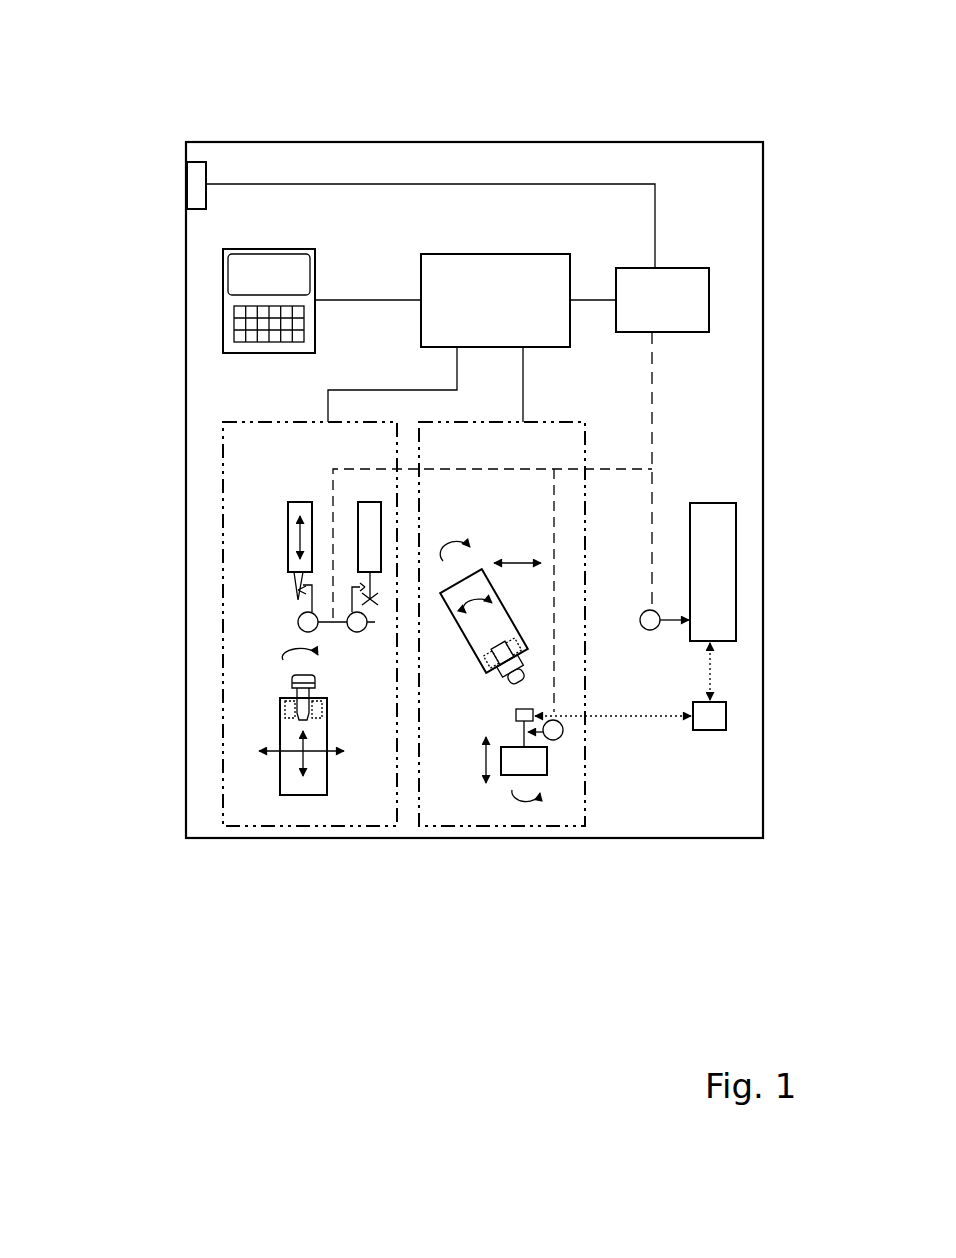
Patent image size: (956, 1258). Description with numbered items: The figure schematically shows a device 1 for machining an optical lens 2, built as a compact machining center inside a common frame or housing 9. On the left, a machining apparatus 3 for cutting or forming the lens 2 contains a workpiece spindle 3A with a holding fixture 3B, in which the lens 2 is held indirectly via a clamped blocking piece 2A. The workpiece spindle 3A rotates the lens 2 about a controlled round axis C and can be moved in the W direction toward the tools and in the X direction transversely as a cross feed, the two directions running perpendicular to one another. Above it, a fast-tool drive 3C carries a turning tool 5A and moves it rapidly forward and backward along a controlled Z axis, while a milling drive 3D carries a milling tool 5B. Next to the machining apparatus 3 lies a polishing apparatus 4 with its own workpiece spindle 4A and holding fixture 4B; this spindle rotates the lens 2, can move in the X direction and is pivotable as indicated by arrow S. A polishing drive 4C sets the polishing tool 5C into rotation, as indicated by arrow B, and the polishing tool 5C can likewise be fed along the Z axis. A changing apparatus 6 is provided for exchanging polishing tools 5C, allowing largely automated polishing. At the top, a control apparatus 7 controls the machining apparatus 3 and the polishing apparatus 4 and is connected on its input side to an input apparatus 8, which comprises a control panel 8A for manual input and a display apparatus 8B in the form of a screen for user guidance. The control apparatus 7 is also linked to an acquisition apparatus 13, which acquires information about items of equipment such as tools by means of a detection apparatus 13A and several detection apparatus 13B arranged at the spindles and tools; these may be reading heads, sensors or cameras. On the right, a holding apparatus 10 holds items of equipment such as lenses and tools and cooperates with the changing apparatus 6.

The device 1 is at (169, 138).
The lens 2 is at (292, 683).
The blocking piece 2A is at (287, 703).
The machining apparatus 3 is at (232, 830).
The workpiece spindle 3A is at (280, 730).
The holding fixture 3B is at (282, 703).
The drive 3C is at (288, 512).
The milling drive 3D is at (362, 510).
The polishing apparatus 4 is at (557, 826).
The workpiece spindle 4A is at (460, 623).
The holding fixture 4B is at (485, 667).
The polishing drive 4C is at (516, 692).
The turning tool 5A is at (298, 590).
The milling tool 5B is at (375, 605).
The polishing tool 5C is at (501, 748).
The changing apparatus 6 is at (717, 713).
The control apparatus 7 is at (555, 254).
The input apparatus 8 is at (223, 283).
The control panel 8A is at (240, 322).
The display apparatus 8B is at (253, 265).
The frame or housing 9 is at (184, 813).
The holding apparatus 10 is at (723, 535).
The acquisition apparatus 13 is at (690, 297).
The detection apparatus 13A is at (193, 180).
The detection apparatus 13B is at (350, 631).
The X direction X is at (527, 560).
The Z axis Z is at (288, 545).
The W direction W is at (302, 760).
The round axis C is at (463, 533).
The arrow B is at (525, 806).
The arrow S is at (494, 604).